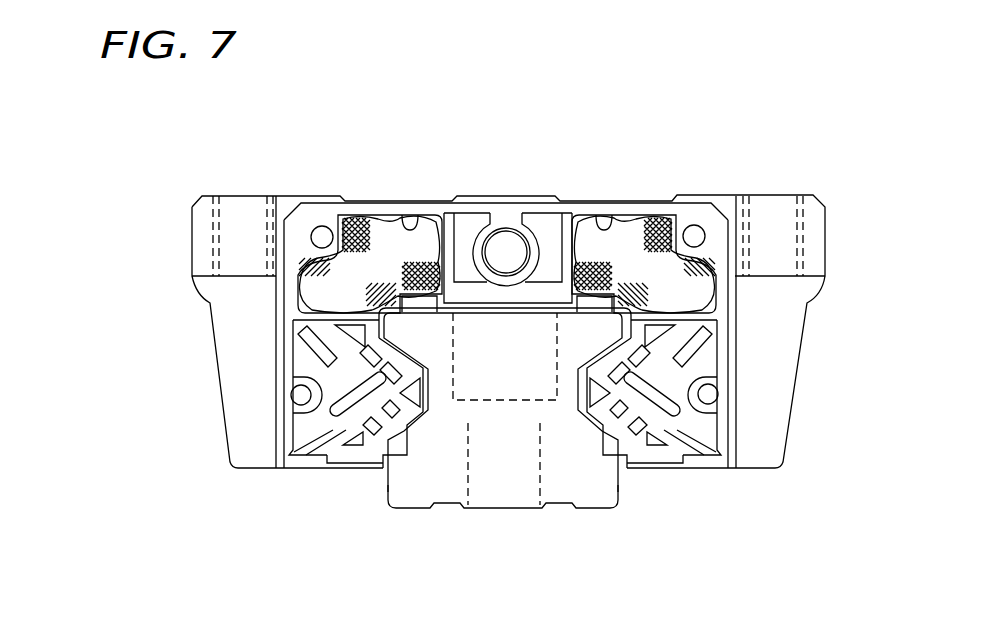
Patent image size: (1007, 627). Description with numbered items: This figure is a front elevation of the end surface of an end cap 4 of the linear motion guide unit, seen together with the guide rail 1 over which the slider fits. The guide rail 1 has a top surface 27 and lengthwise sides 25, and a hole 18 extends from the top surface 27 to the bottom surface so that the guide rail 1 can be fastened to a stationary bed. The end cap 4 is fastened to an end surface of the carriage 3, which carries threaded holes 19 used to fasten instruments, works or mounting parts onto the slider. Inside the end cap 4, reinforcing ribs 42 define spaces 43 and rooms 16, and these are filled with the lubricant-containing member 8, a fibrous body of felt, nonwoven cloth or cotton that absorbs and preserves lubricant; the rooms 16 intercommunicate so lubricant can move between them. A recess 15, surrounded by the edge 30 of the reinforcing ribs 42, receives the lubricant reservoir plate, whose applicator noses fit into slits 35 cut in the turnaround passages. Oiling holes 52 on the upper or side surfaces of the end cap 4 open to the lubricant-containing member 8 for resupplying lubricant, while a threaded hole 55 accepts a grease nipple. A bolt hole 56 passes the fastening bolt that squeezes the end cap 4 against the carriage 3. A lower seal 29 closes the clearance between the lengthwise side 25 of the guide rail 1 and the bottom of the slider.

The guide rail 1 is at (567, 472).
The carriage 3 is at (735, 205).
The end cap 4 is at (312, 200).
The lubricant-containing member 8 is at (373, 250).
The recess 15 is at (652, 397).
The rooms 16 is at (423, 214).
The hole 18 is at (455, 357).
The threaded holes 19 is at (223, 200).
The lengthwise side 25 is at (381, 487).
The top surface 27 is at (468, 214).
The lower seal 29 is at (360, 465).
The edge 30 is at (590, 212).
The slits 35 is at (360, 440).
The reinforcing ribs 42 is at (347, 323).
The spaces 43 is at (380, 385).
The oiling holes 52 is at (378, 214).
The threaded hole 55 is at (508, 242).
The bolt hole 56 is at (325, 228).